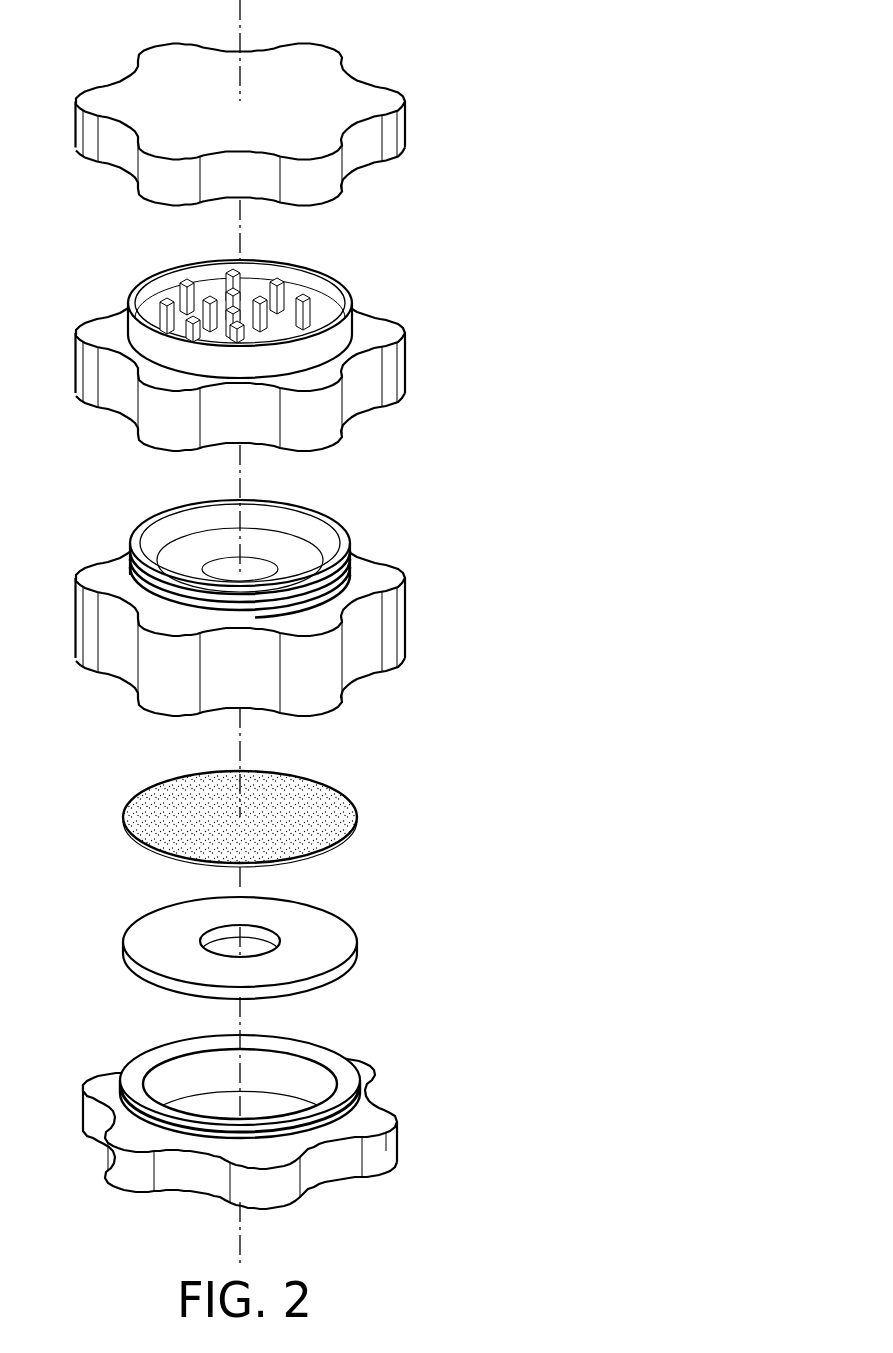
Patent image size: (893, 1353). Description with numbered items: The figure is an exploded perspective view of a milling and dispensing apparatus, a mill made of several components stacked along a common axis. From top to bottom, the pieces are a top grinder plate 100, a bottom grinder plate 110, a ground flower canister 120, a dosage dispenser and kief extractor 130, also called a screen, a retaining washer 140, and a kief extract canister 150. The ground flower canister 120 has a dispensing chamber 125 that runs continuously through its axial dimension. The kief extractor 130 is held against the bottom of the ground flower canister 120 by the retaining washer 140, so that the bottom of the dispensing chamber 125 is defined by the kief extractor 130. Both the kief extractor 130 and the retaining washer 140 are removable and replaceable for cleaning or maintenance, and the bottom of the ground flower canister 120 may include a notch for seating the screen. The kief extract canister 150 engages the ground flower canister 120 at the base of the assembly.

The top grinder plate 100 is at (404, 93).
The bottom grinder plate 110 is at (404, 323).
The ground flower canister 120 is at (308, 581).
The dispensing chamber 125 is at (216, 572).
The dosage dispenser and kief extractor 130 is at (347, 791).
The retaining washer 140 is at (355, 923).
The kief extract canister 150 is at (392, 1108).